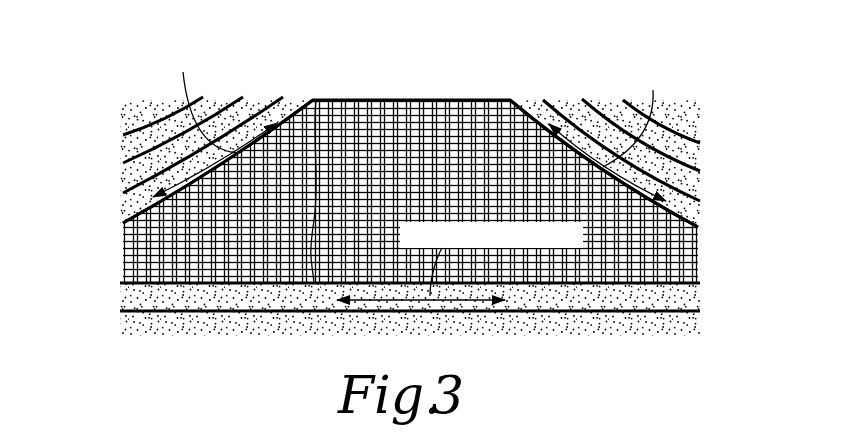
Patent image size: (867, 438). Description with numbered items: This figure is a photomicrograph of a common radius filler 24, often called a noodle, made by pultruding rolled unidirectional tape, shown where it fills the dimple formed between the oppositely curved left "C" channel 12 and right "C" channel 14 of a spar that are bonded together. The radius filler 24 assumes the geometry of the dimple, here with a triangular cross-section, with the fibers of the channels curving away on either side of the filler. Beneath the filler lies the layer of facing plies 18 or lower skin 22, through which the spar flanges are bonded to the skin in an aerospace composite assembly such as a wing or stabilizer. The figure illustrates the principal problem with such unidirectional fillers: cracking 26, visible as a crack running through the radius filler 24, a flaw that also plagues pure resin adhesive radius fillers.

The left "C" channel 12 is at (137, 175).
The right "C" channel 14 is at (690, 182).
The radius filler 24 is at (398, 157).
The cracking 26 is at (312, 202).
The facing plies 18 is at (450, 331).
The lower skin 22 is at (623, 328).